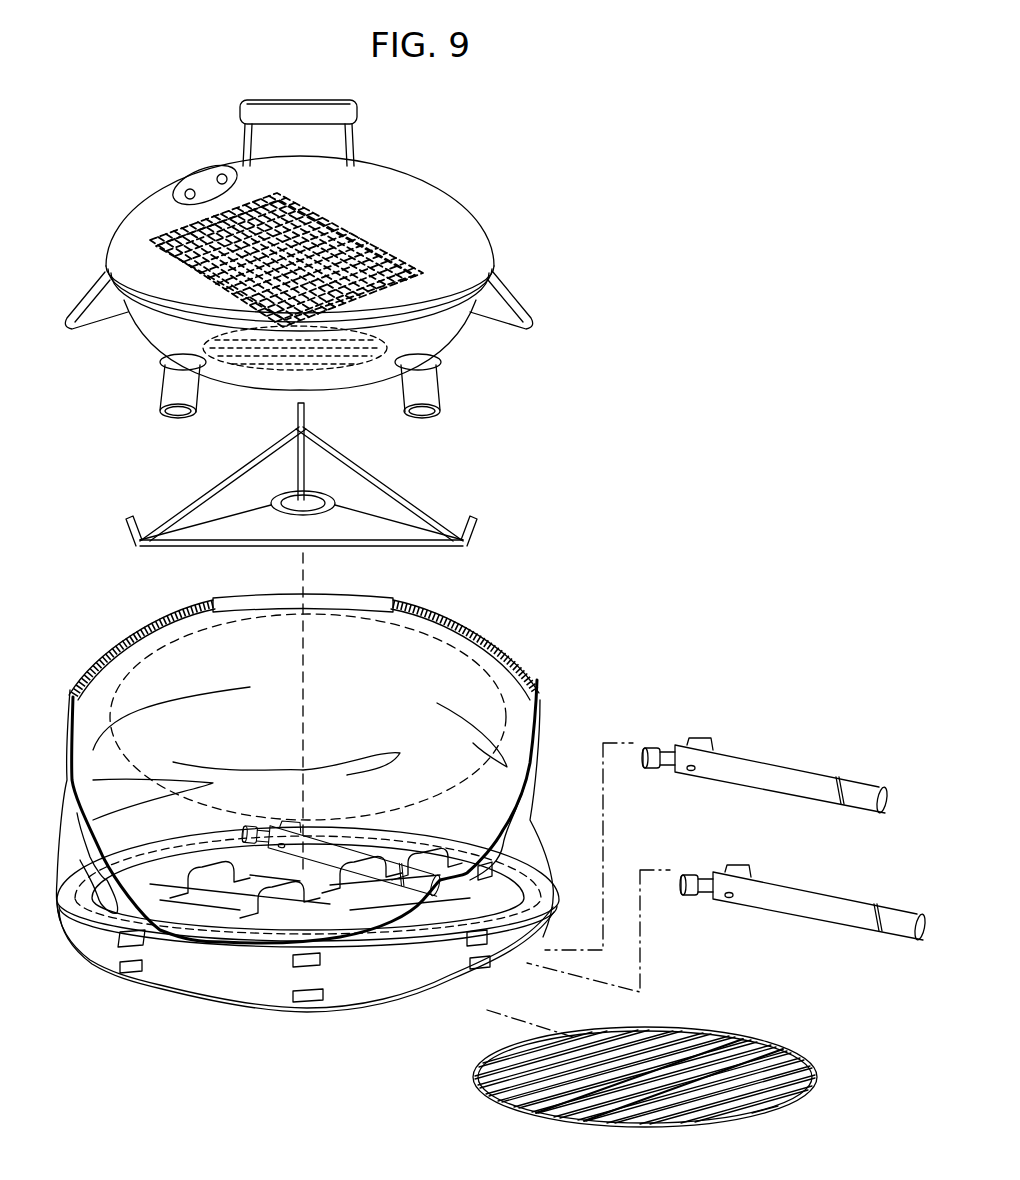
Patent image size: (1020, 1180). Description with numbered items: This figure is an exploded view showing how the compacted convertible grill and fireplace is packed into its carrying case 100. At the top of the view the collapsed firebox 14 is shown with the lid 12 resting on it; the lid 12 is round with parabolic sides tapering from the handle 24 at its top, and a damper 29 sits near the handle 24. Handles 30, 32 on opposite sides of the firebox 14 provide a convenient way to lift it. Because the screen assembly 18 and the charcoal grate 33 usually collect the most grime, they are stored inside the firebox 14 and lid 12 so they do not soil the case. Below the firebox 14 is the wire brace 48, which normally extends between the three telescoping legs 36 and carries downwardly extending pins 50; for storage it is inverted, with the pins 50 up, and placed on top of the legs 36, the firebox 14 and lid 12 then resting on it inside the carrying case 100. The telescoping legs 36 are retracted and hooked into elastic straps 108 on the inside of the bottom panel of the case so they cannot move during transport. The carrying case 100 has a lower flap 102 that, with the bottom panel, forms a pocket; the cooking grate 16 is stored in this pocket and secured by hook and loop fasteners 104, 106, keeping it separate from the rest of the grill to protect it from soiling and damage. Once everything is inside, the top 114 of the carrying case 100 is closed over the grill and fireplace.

The lid 12 is at (383, 182).
The firebox 14 is at (152, 327).
The cooking grate 16 is at (490, 1092).
The screen assembly 18 is at (450, 223).
The handle 24 is at (292, 105).
The damper 29 is at (178, 193).
The handle 30 is at (93, 290).
The handle 32 is at (500, 293).
The charcoal grate 33 is at (427, 337).
The telescoping legs 36 is at (745, 763).
The wire brace 48 is at (393, 487).
The downwardly extending pins 50 is at (305, 413).
The carrying case 100 is at (547, 626).
The lower flap 102 is at (267, 997).
The hook and loop fastener 104 is at (130, 975).
The hook and loop fastener 106 is at (150, 952).
The elastic straps 108 is at (182, 840).
The top 114 is at (130, 636).